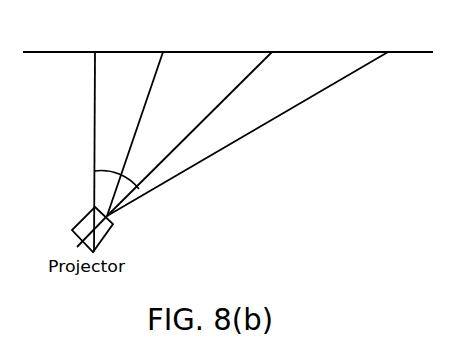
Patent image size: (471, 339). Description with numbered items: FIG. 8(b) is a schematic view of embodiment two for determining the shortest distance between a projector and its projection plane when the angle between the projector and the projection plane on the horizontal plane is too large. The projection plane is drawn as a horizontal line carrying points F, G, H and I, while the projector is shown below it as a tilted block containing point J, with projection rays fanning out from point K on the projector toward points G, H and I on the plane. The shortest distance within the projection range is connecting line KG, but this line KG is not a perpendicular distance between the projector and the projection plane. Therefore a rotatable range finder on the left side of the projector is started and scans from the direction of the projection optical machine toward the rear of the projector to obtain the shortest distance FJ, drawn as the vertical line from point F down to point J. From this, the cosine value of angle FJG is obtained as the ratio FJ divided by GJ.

The point F is at (96, 142).
The point G is at (138, 121).
The point H is at (192, 124).
The point I is at (249, 124).
The point J is at (92, 229).
The point K is at (102, 230).